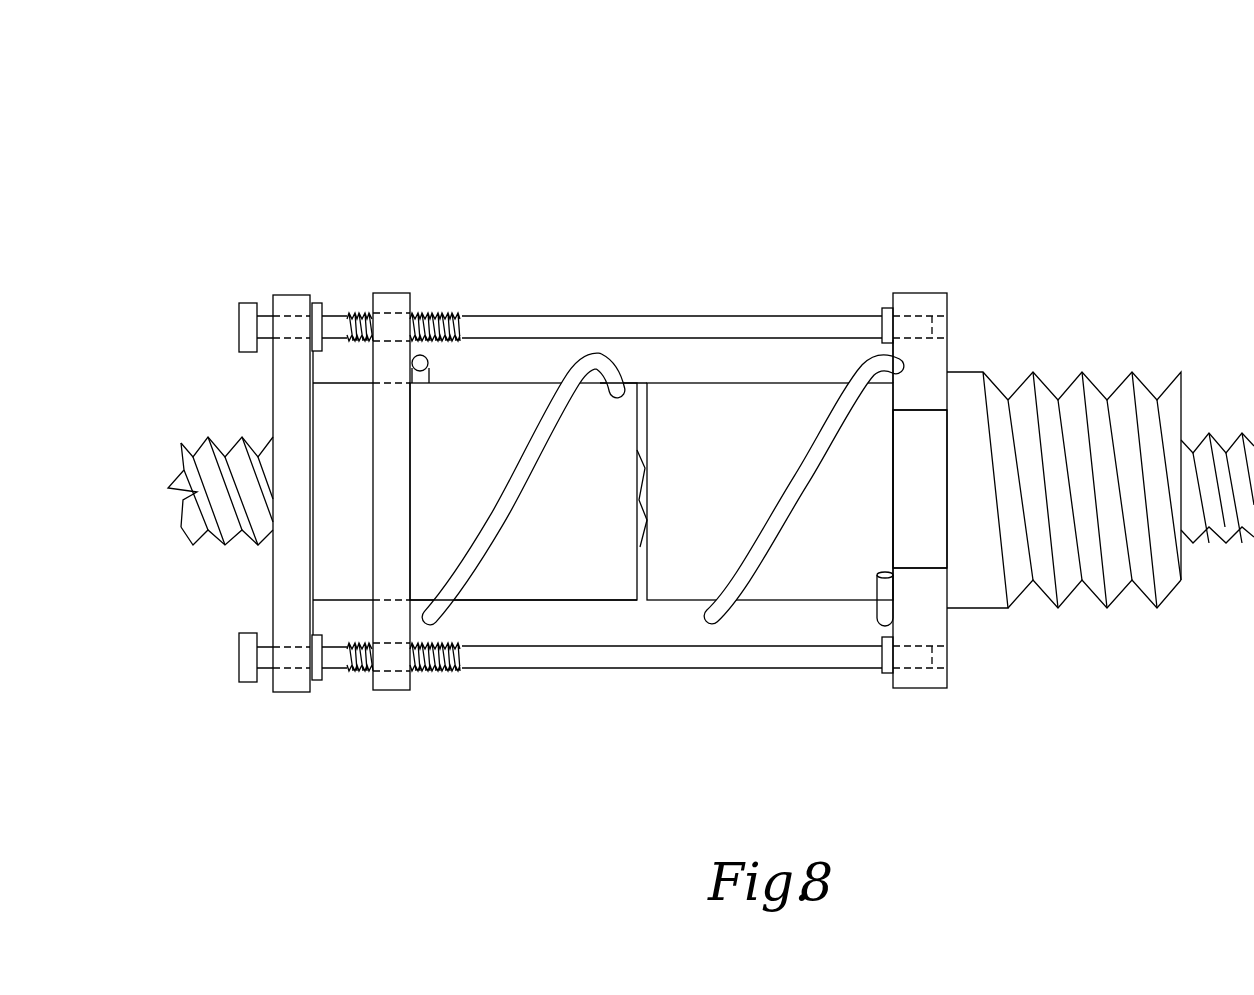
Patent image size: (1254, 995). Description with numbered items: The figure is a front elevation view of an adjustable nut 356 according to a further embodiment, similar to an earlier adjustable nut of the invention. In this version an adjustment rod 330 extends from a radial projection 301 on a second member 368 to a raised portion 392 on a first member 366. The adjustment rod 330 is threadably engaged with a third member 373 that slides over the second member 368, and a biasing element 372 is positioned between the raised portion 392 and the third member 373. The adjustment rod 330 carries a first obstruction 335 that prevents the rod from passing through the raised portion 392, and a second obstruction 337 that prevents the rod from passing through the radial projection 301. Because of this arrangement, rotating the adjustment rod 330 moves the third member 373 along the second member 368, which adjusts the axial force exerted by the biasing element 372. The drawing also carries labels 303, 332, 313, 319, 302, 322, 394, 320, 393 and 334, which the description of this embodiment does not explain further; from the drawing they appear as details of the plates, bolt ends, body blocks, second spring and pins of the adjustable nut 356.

The adjustable nut 356 is at (485, 118).
The radial projection 301 is at (288, 576).
The bore in first plate 303 is at (292, 307).
The bolt head 332 is at (248, 323).
The second obstruction 337 is at (321, 303).
The adjustment rod 330 is at (440, 312).
The bore in second plate 313 is at (392, 603).
The third member 373 is at (390, 293).
The plate face 319 is at (455, 447).
The body 302 is at (603, 500).
The second member 368 is at (516, 600).
The first member 366 is at (687, 383).
The pin 322 is at (430, 363).
The biasing element 372 is at (707, 626).
The second spring 394 is at (880, 428).
The first obstruction 335 is at (888, 308).
The pin 320 is at (880, 608).
The third plate 393 is at (927, 307).
The bore in third plate 334 is at (930, 322).
The raised portion 392 is at (923, 450).